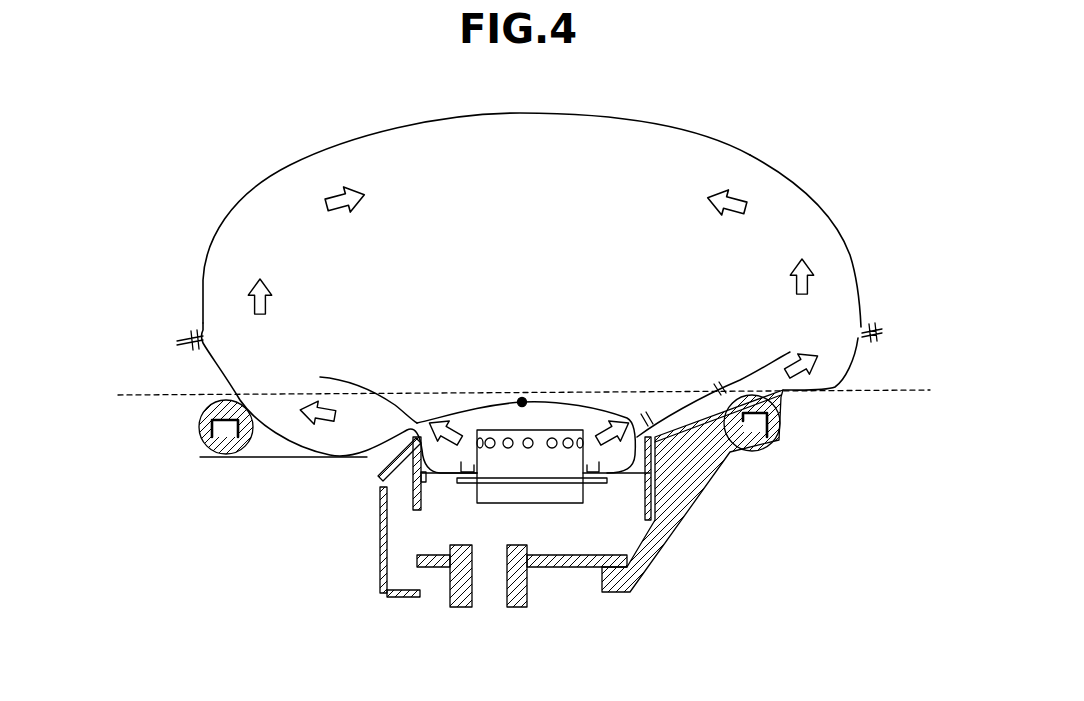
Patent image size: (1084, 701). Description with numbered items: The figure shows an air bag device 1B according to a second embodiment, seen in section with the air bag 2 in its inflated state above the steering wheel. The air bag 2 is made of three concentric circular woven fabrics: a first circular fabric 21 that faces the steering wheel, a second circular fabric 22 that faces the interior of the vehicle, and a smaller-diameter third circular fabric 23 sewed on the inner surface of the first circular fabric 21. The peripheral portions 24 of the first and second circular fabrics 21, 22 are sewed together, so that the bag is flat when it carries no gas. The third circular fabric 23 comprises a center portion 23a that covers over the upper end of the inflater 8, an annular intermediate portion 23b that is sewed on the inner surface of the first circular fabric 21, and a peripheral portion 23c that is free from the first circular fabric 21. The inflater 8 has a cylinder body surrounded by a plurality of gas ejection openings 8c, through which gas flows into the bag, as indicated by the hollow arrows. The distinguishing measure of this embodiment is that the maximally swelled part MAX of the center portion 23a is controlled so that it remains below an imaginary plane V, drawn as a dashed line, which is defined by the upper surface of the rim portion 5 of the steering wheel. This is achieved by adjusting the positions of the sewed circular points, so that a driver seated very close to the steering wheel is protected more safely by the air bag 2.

The air bag device 1B is at (838, 79).
The air bag 2 is at (678, 118).
The second circular fabric 22 is at (838, 220).
The peripheral portions 24 is at (872, 325).
The first circular fabric 21 is at (840, 383).
The third circular fabric 23 is at (598, 405).
The center portion 23a is at (547, 402).
The annular intermediate portion 23b is at (675, 412).
The peripheral portion 23c is at (357, 380).
The maximally swelled part MAX is at (522, 398).
The inflater 8 is at (567, 503).
The gas ejection openings 8c is at (508, 438).
The rim portion 5 is at (200, 412).
The imaginary plane V is at (898, 390).